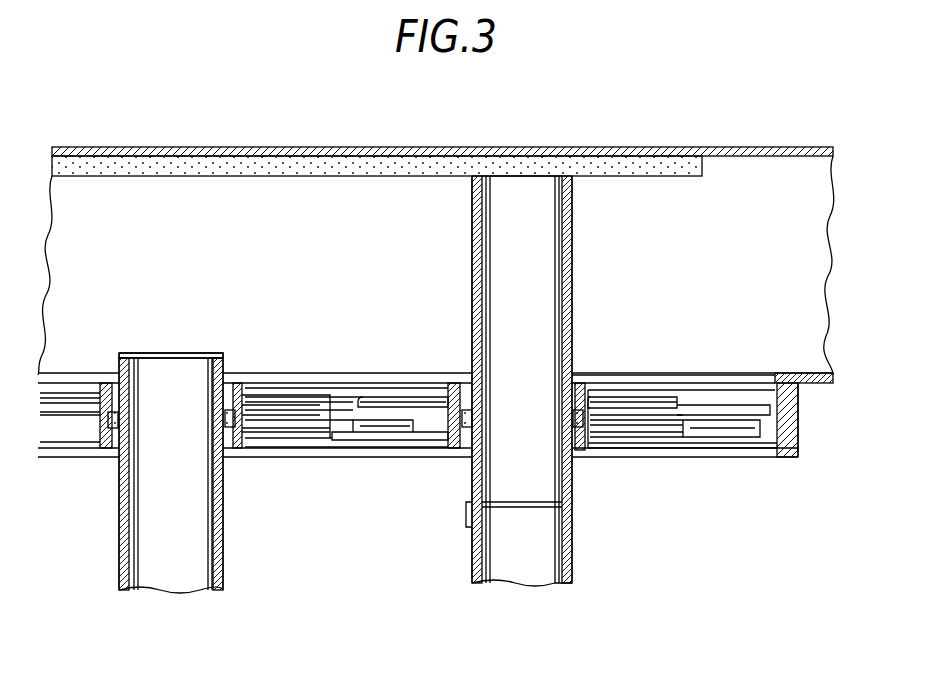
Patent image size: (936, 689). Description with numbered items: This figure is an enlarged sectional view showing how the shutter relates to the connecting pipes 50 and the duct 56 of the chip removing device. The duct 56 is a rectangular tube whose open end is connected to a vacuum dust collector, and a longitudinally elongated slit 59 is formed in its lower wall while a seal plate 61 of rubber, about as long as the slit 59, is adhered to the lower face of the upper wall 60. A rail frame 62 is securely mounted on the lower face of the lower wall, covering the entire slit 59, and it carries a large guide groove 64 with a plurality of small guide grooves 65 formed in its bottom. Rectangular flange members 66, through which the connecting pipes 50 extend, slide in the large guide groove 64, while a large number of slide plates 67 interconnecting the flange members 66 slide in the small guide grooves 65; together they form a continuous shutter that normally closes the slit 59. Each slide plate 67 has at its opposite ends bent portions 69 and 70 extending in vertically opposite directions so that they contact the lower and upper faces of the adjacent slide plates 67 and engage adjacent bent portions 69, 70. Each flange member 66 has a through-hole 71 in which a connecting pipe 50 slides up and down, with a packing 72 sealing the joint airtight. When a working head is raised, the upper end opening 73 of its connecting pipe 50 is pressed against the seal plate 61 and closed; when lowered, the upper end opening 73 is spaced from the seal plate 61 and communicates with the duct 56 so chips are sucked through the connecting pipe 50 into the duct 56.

The connecting pipe 50 is at (575, 270).
The duct 56 is at (820, 287).
The slit 59 is at (722, 375).
The upper wall 60 is at (766, 150).
The seal plate 61 is at (270, 150).
The rail frame 62 is at (798, 447).
The large guide groove 64 is at (632, 440).
The small guide grooves 65 is at (300, 430).
The flange member 66 is at (238, 395).
The slide plate 67 is at (72, 445).
The bent portion 69 is at (430, 440).
The bent portion 70 is at (365, 402).
The through-hole 71 is at (104, 395).
The packing 72 is at (110, 430).
The upper end opening 73 is at (190, 353).